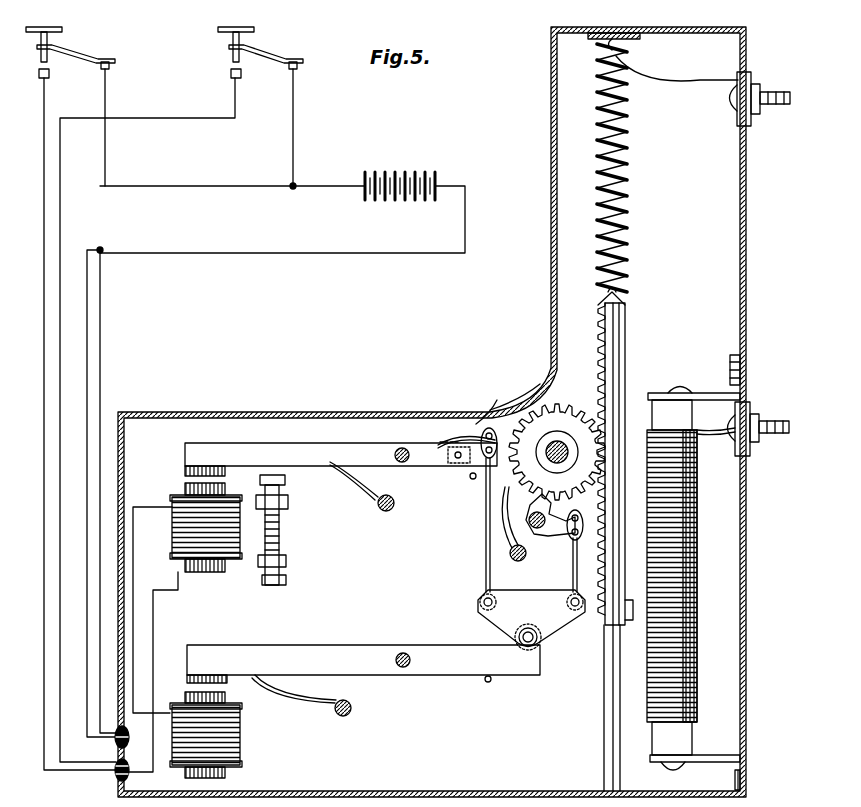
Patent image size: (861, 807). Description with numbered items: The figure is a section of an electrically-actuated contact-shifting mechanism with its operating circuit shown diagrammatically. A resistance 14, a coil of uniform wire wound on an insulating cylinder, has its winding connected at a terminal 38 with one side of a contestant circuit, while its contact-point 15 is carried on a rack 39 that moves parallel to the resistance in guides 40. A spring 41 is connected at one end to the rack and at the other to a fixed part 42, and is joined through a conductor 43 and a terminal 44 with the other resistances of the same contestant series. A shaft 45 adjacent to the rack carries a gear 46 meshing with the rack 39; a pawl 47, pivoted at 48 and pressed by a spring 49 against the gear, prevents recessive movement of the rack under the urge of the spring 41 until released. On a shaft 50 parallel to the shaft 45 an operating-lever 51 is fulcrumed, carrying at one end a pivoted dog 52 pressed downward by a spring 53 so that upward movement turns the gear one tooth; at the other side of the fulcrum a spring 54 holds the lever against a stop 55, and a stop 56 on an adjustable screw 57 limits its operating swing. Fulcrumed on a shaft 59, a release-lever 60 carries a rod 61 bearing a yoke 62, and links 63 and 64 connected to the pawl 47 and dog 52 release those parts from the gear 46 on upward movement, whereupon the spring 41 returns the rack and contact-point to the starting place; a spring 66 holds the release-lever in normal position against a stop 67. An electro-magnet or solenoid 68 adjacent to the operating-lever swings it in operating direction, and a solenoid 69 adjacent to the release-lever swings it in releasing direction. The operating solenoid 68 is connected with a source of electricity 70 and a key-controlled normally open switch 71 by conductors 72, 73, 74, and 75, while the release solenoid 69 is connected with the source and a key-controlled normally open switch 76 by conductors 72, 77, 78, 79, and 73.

The resistance 14 is at (706, 562).
The contact-point 15 is at (631, 612).
The terminal 38 is at (776, 430).
The rack 39 is at (628, 324).
The guides 40 is at (603, 708).
The spring 41 is at (629, 166).
The fixed part 42 is at (608, 42).
The conductor 43 is at (684, 79).
The terminal 44 is at (770, 94).
The shaft 45 is at (559, 440).
The gear 46 is at (540, 386).
The pawl 47 is at (540, 537).
The pawl pivot 48 is at (529, 521).
The spring 49 is at (512, 549).
The shaft 50 is at (405, 446).
The operating-lever 51 is at (358, 452).
The pivoted dog 52 is at (490, 410).
The spring 53 is at (452, 438).
The spring 54 is at (371, 502).
The stop 55 is at (471, 479).
The stop 56 is at (287, 484).
The screw 57 is at (281, 545).
The shaft 59 is at (407, 667).
The release-lever 60 is at (348, 652).
The rod 61 is at (518, 638).
The yoke 62 is at (531, 618).
The link 63 is at (575, 568).
The link 64 is at (487, 566).
The spring 66 is at (328, 702).
The stop 67 is at (489, 683).
The electro-magnet or solenoid 68 is at (260, 555).
The electro-magnet or solenoid 69 is at (243, 745).
The source of electricity 70 is at (437, 183).
The key-controlled normally open switch 71 is at (260, 52).
The conductor 72 is at (296, 186).
The conductor 73 is at (326, 253).
The conductor 74 is at (102, 372).
The conductor 75 is at (62, 238).
The key-controlled normally open switch 76 is at (70, 52).
The conductor 77 is at (190, 186).
The conductor 78 is at (46, 208).
The conductor 79 is at (88, 397).